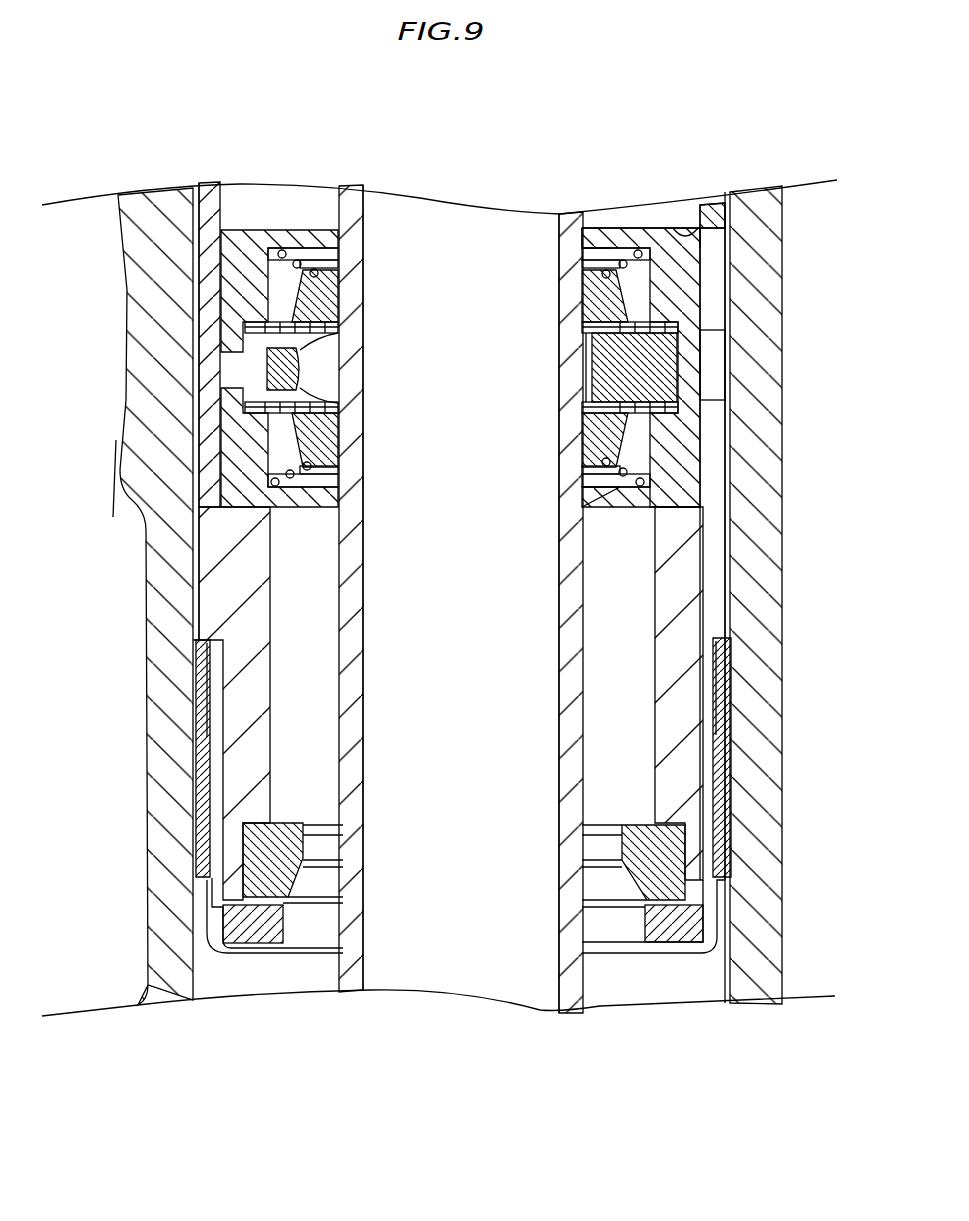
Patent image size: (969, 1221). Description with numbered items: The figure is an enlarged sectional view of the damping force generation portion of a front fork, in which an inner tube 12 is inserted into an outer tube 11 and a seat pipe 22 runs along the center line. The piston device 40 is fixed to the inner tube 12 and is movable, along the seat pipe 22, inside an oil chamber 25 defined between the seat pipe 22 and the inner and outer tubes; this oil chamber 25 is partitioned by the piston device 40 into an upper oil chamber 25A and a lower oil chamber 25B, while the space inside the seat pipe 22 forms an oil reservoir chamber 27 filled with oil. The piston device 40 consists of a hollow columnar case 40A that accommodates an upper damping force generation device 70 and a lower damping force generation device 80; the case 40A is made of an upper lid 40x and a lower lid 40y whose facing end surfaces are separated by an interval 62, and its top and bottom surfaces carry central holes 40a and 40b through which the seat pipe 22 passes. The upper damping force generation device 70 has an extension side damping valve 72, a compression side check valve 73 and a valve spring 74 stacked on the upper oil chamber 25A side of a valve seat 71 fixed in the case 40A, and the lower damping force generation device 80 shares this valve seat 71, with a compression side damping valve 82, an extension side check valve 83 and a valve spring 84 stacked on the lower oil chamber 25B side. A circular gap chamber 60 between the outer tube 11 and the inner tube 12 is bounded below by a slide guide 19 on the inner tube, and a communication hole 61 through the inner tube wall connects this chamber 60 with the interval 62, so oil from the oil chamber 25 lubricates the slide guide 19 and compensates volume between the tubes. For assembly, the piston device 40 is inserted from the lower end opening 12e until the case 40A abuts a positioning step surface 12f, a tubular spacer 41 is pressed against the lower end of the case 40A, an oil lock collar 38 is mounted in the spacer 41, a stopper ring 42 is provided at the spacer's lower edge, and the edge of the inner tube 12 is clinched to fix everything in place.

The outer tube 11 is at (760, 208).
The inner tube 12 is at (707, 220).
The lower end opening 12e is at (620, 955).
The positioning step surface 12f is at (680, 225).
The slide guide 19 is at (728, 745).
The seat pipe 22 is at (352, 212).
The oil chamber 25 is at (301, 205).
The upper oil chamber 25A is at (258, 200).
The lower oil chamber 25B is at (285, 975).
The oil reservoir chamber 27 is at (432, 215).
The oil lock collar 38 is at (668, 855).
The piston device 40 is at (705, 275).
The case 40A is at (695, 258).
The central hole 40a is at (585, 240).
The central hole 40b is at (585, 510).
The upper lid 40x is at (662, 250).
The lower lid 40y is at (652, 508).
The tubular spacer 41 is at (680, 575).
The stopper ring 42 is at (668, 930).
The circular gap chamber 60 is at (728, 478).
The communication hole 61 is at (712, 340).
The interval 62 is at (690, 378).
The upper damping force generation device 70 is at (283, 242).
The valve seat 71 is at (246, 366).
The extension side damping valve 72 is at (282, 320).
The compression side check valve 73 is at (307, 297).
The valve spring 74 is at (297, 268).
The lower damping force generation device 80 is at (295, 510).
The compression side damping valve 82 is at (285, 418).
The extension side check valve 83 is at (290, 443).
The valve spring 84 is at (280, 473).